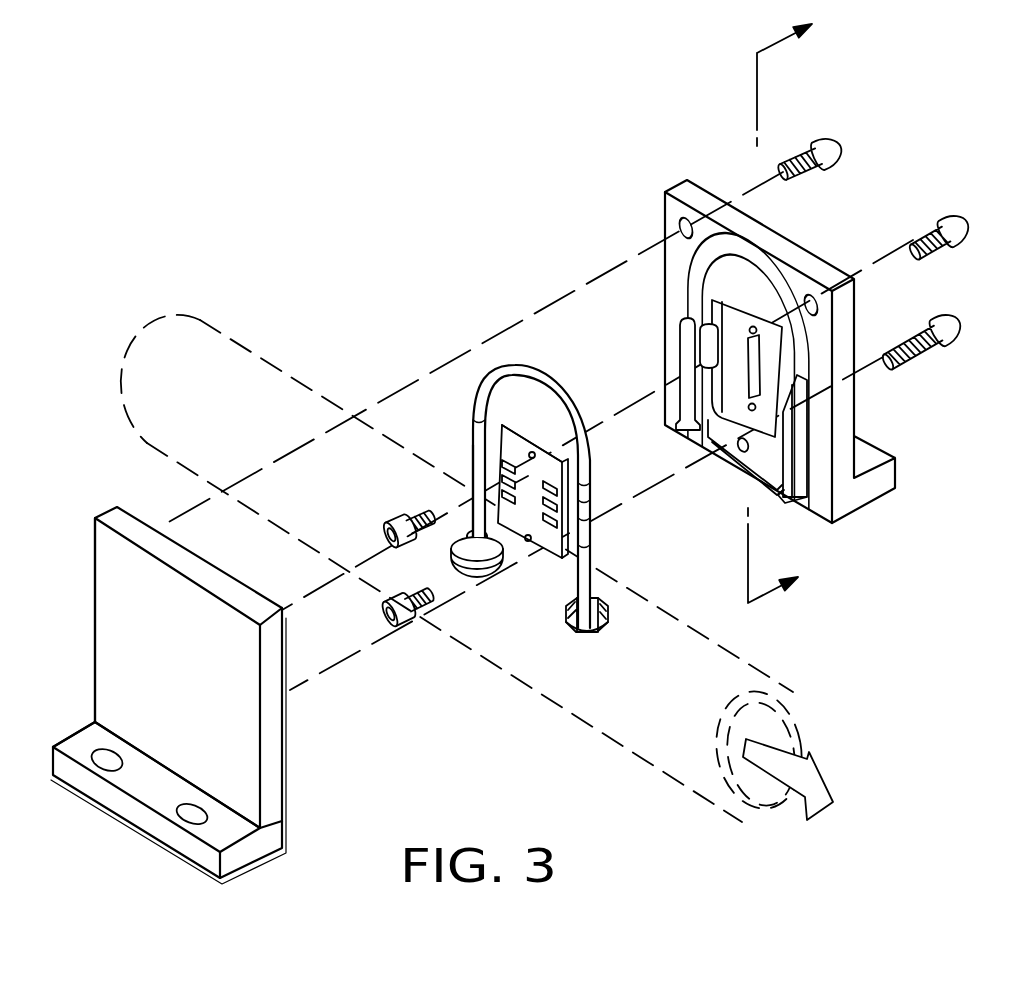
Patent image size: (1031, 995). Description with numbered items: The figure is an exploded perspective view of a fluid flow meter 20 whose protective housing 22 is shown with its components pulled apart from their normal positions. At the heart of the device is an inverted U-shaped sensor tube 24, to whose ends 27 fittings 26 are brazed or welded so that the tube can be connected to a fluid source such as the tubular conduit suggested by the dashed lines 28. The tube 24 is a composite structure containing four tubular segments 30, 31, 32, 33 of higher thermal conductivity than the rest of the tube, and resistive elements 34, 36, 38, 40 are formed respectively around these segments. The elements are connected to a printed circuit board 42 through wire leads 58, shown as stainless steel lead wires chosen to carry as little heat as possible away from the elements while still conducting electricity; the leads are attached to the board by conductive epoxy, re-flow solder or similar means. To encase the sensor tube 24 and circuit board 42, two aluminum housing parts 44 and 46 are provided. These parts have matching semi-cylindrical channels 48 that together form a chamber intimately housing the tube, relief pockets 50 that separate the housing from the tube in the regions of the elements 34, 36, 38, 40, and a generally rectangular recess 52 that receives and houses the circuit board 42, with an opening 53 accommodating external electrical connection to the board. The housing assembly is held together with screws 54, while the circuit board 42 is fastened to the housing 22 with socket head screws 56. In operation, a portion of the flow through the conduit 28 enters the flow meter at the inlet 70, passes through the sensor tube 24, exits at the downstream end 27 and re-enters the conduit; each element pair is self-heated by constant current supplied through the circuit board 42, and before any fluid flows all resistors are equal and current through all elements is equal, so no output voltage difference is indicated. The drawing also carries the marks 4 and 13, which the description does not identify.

The section line 4- 4 is at (785, 313).
The screw 13 is at (966, 224).
The fluid flow meter 20 is at (483, 689).
The protective housing 22 is at (766, 319).
The sensor tube 24 is at (526, 450).
The fittings 26 is at (608, 628).
The tube ends 27 is at (586, 631).
The tubular conduit 28 is at (702, 770).
The tubular segment 30 is at (535, 460).
The tubular segment 31 is at (483, 416).
The tubular segment 32 is at (593, 484).
The tubular segment 33 is at (580, 523).
The resistive element 34 is at (480, 468).
The resistive element 36 is at (503, 430).
The resistive element 38 is at (560, 503).
The resistive element 40 is at (588, 543).
The printed circuit board 42 is at (535, 428).
The aluminum housing part 44 is at (278, 760).
The aluminum housing part 46 is at (857, 498).
The semi-cylindrical channels 48 is at (727, 356).
The relief pockets 50 is at (802, 397).
The rectangular recess 52 is at (737, 313).
The opening 53 is at (748, 367).
The screws 54 is at (838, 148).
The socket head screws 56 is at (388, 537).
The wire leads 58 is at (484, 393).
The flow meter inlet 70 is at (477, 576).